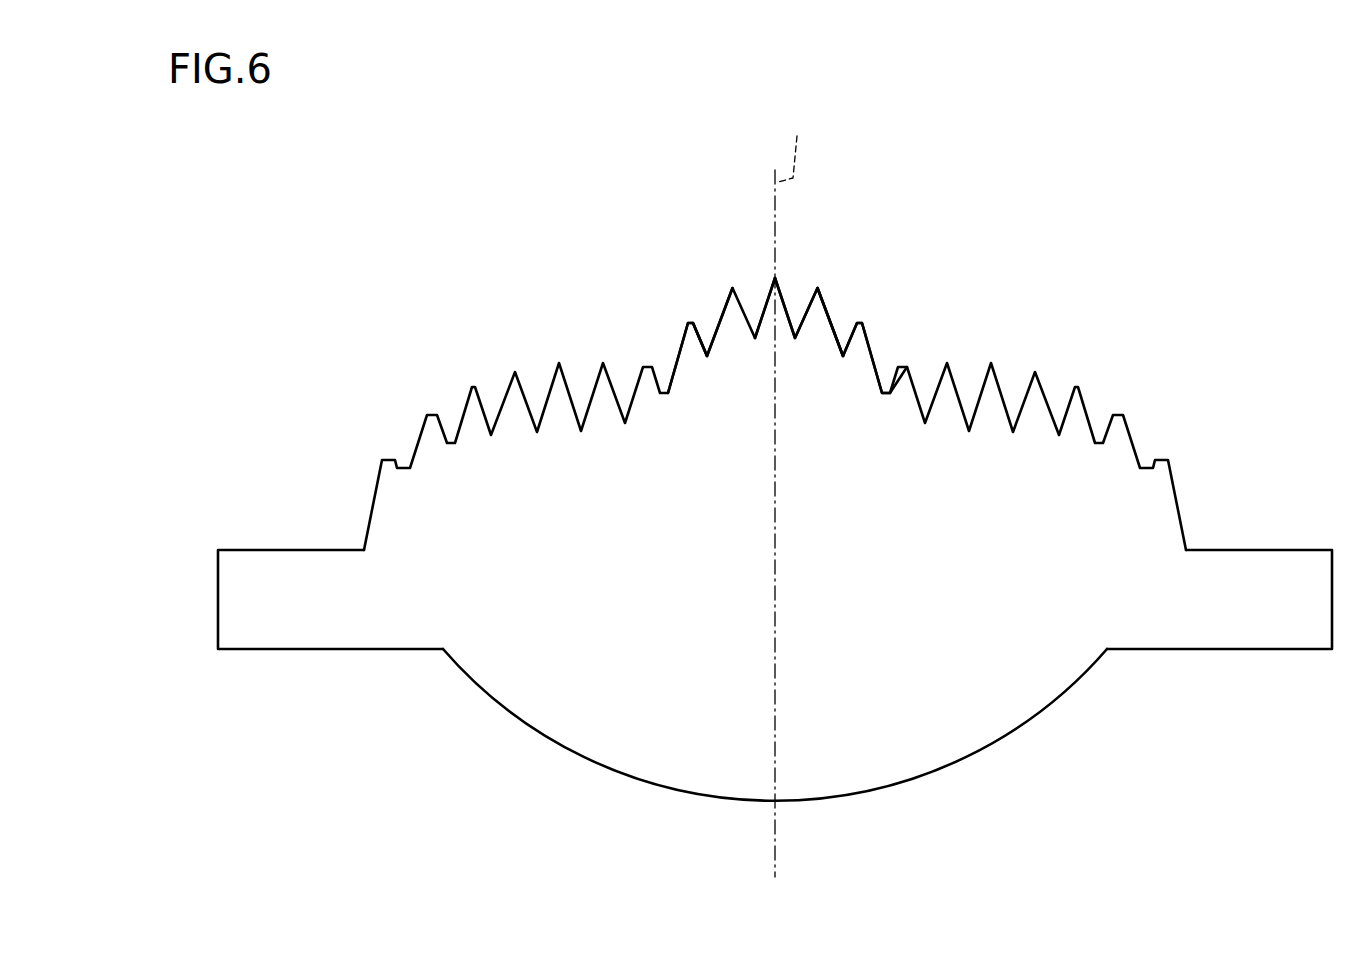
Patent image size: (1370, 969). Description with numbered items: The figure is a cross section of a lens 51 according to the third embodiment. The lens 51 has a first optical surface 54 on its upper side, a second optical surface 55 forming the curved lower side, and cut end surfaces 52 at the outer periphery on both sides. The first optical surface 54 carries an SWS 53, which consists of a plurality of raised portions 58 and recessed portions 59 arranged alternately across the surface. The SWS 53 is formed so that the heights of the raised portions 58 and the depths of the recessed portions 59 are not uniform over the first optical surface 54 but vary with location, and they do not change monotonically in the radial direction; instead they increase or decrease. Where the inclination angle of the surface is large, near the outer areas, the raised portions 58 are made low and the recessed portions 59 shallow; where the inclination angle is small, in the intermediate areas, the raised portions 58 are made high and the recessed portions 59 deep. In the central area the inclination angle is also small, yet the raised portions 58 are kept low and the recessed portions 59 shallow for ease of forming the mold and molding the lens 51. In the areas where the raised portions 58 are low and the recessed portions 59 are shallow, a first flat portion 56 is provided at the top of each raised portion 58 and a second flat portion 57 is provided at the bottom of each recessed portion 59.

The lens 51 is at (1209, 219).
The cut end surfaces 52 is at (1277, 550).
The SWS 53 is at (500, 381).
The first optical surface 54 is at (908, 357).
The second optical surface 55 is at (913, 780).
The first flat portion 56 is at (690, 322).
The second flat portion 57 is at (706, 352).
The raised portions 58 is at (811, 301).
The recessed portions 59 is at (887, 373).